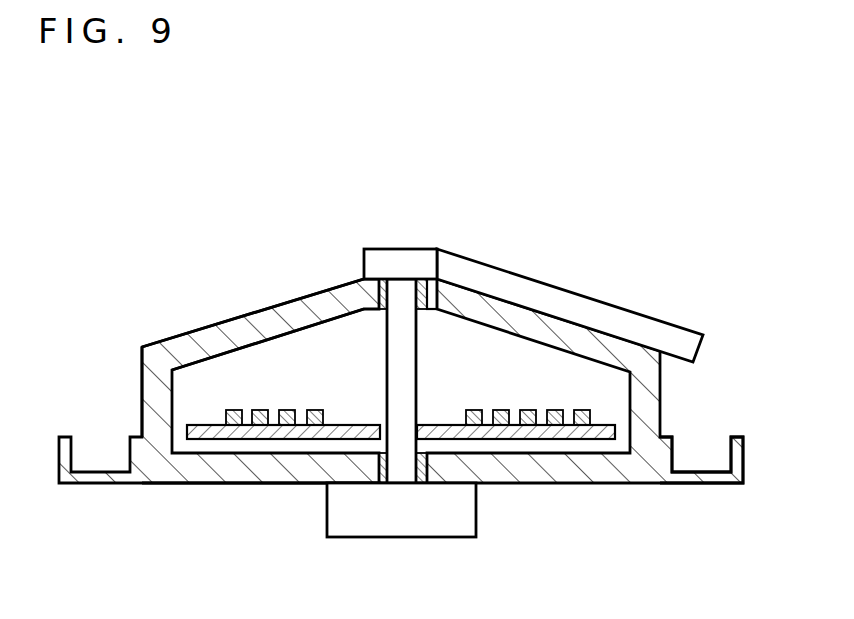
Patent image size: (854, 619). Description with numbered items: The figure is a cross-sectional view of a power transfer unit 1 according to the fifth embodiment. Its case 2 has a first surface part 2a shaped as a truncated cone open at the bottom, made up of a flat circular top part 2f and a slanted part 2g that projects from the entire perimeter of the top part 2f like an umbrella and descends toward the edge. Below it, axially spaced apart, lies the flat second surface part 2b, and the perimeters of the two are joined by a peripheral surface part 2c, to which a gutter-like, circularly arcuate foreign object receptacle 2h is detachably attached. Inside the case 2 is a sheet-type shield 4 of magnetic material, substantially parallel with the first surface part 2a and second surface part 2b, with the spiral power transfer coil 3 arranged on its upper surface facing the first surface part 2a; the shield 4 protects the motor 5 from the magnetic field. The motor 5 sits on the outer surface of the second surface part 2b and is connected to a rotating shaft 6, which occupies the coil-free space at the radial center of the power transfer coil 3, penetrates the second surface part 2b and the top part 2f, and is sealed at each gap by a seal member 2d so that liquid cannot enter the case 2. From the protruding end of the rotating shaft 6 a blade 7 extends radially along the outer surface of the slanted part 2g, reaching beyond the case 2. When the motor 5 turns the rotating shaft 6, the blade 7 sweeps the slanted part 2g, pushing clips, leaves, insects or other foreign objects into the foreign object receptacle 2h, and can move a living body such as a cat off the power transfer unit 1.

The power transfer unit 1 is at (757, 145).
The case 2 is at (628, 497).
The first surface part 2a is at (190, 324).
The second surface part 2b is at (222, 477).
The peripheral surface part 2c is at (150, 405).
The seal member 2d is at (418, 292).
The top part 2f is at (432, 295).
The slanted part 2g is at (265, 320).
The foreign object receptacle 2h is at (707, 487).
The power transfer coil 3 is at (588, 413).
The shield 4 is at (542, 432).
The motor 5 is at (342, 527).
The rotating shaft 6 is at (390, 357).
The blade 7 is at (678, 337).